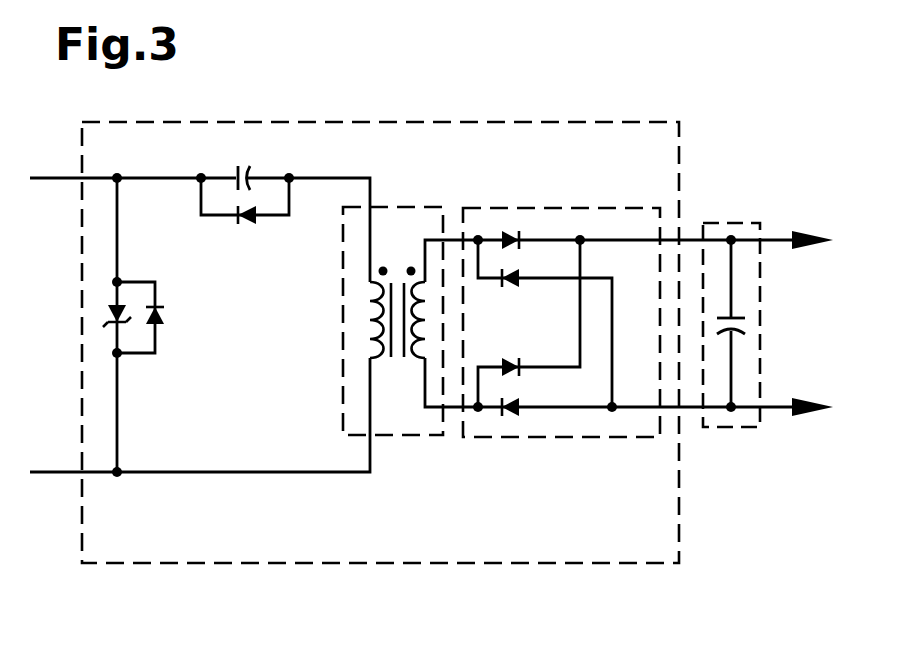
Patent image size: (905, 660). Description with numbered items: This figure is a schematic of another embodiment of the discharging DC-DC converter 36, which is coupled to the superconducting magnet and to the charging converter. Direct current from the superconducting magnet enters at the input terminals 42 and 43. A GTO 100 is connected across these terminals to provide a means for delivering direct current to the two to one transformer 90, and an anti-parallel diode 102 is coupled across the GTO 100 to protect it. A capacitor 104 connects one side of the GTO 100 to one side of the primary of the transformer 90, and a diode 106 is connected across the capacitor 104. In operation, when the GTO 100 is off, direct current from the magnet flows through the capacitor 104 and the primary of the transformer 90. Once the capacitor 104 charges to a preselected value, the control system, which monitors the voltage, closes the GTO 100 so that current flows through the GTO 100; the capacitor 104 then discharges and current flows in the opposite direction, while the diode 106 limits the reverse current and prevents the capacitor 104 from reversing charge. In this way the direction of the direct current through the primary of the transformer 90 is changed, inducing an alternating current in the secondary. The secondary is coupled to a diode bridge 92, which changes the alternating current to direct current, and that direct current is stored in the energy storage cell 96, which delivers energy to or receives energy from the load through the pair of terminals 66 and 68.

The discharging DC-DC converter 36 is at (386, 124).
The input terminal 42 is at (62, 177).
The input terminal 43 is at (62, 473).
The terminal 66 is at (775, 237).
The terminal 68 is at (775, 404).
The two to one transformer 90 is at (402, 213).
The diode bridge 92 is at (568, 213).
The energy storage cell 96 is at (741, 228).
The GTO 100 is at (110, 316).
The anti-parallel diode 102 is at (160, 322).
The capacitor 104 is at (248, 170).
The diode 106 is at (244, 222).